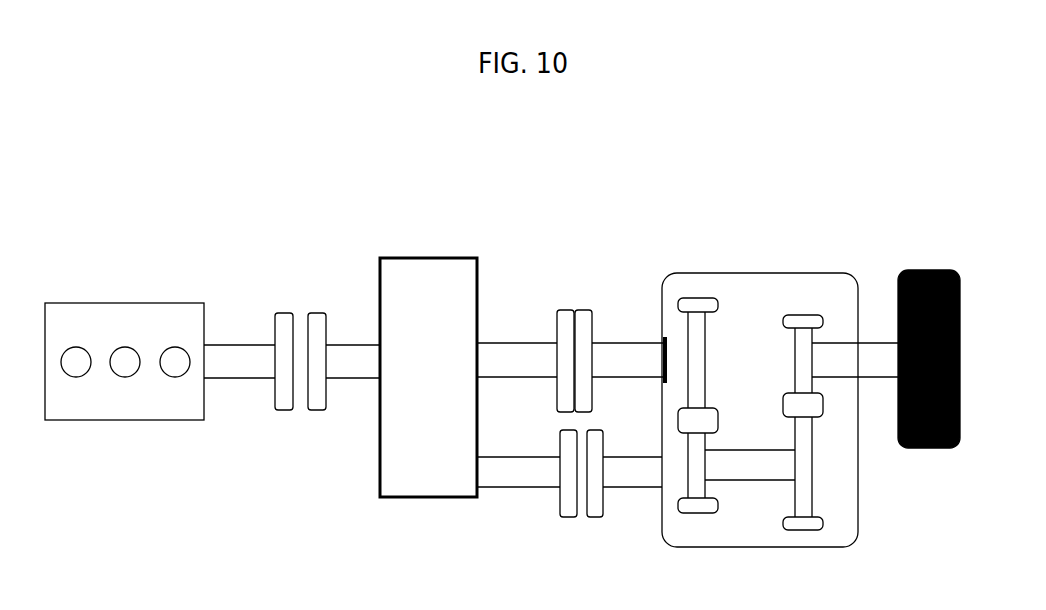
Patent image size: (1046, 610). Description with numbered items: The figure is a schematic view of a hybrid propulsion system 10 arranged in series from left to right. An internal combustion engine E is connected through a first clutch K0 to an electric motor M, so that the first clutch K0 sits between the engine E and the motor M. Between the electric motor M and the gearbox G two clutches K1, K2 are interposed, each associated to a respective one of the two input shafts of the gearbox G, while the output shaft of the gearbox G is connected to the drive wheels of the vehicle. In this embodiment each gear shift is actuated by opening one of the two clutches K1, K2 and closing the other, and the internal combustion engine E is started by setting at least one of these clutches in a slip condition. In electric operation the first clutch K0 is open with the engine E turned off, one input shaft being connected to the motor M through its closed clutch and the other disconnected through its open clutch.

The hybrid propulsion system 10 is at (637, 261).
The internal combustion engine E is at (163, 312).
The first clutch K0 is at (302, 432).
The electric motor M is at (405, 257).
The second clutch K1 is at (545, 505).
The second clutch K2 is at (575, 302).
The gearbox G is at (767, 284).